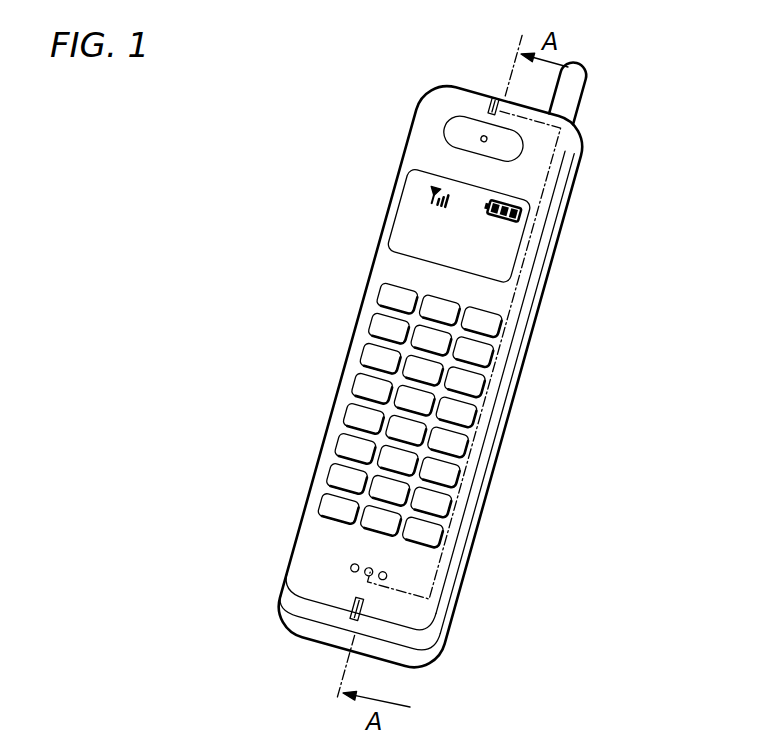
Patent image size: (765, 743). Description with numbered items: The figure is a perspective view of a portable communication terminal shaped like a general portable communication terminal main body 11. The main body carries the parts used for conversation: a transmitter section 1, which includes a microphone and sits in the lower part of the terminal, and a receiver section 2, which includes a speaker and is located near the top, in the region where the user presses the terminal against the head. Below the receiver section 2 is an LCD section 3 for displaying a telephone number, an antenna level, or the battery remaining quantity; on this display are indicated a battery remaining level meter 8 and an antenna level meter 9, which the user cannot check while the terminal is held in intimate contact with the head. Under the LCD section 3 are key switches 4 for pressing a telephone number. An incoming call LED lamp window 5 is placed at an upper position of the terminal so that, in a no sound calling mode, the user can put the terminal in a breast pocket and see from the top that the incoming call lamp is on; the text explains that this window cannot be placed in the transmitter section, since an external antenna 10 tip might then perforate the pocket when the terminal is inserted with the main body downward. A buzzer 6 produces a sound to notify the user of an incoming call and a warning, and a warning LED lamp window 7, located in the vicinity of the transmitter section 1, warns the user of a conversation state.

The transmitter section 1 is at (403, 570).
The receiver section 2 is at (474, 125).
The LCD section 3 is at (381, 207).
The key switches 4 is at (353, 339).
The incoming call LED lamp window 5 is at (494, 85).
The buzzer 6 is at (565, 211).
The warning LED lamp window 7 is at (348, 588).
The battery remaining level meter 8 is at (529, 190).
The antenna level meter 9 is at (408, 164).
The antenna 10 is at (642, 33).
The portable communication terminal main body 11 is at (470, 590).